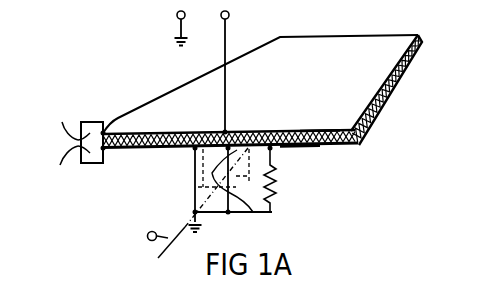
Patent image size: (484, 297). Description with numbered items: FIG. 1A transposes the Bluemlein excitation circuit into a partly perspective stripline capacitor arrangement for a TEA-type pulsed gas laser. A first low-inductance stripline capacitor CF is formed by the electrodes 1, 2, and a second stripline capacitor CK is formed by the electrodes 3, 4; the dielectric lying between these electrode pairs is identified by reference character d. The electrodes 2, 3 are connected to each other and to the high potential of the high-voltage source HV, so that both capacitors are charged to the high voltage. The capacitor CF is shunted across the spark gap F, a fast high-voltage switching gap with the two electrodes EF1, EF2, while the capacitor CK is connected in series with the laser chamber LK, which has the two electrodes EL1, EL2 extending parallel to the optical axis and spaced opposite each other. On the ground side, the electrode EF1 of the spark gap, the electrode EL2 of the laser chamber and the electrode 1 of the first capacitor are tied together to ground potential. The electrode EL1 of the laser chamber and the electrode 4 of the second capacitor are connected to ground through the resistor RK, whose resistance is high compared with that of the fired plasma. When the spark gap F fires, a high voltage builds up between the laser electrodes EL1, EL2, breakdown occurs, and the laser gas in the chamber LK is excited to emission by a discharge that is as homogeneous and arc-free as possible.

The electrode of the first capacitor 1 is at (135, 149).
The electrode of the first capacitor 2 is at (134, 132).
The electrode of the second capacitor 3 is at (261, 131).
The electrode of the second capacitor 4 is at (290, 148).
The dielectric d is at (359, 143).
The spark gap F is at (74, 140).
The electrode of the spark gap EF1 is at (57, 171).
The electrode of the spark gap EF2 is at (57, 116).
The first low-inductance stripline capacitor CF is at (198, 73).
The second low-inductance stripline capacitor CK is at (318, 113).
The electrode of the laser chamber EL1 is at (218, 164).
The electrode of the laser chamber EL2 is at (205, 185).
The resistor RK is at (277, 190).
The laser chamber LK is at (231, 196).
The high-voltage source HV is at (193, 25).